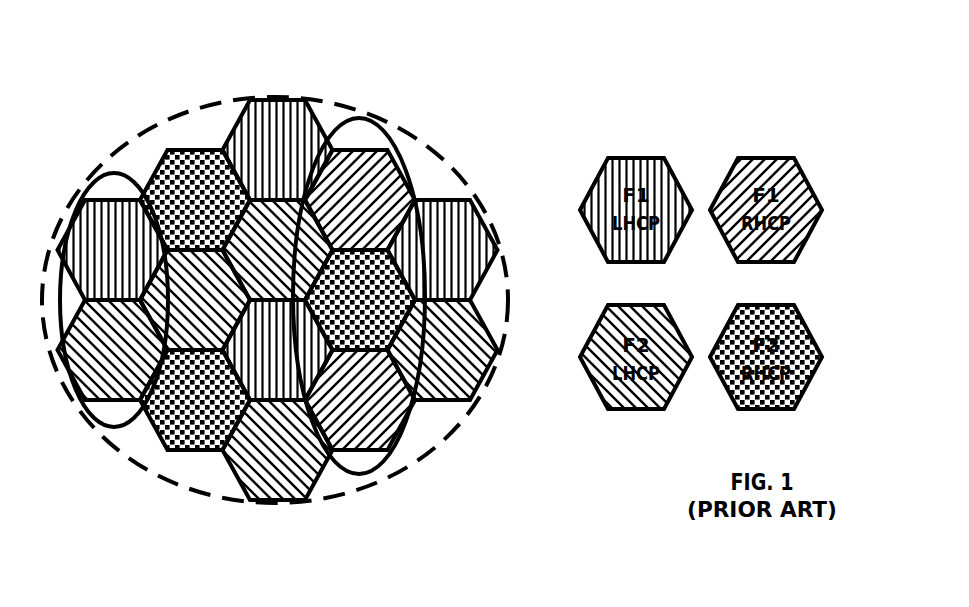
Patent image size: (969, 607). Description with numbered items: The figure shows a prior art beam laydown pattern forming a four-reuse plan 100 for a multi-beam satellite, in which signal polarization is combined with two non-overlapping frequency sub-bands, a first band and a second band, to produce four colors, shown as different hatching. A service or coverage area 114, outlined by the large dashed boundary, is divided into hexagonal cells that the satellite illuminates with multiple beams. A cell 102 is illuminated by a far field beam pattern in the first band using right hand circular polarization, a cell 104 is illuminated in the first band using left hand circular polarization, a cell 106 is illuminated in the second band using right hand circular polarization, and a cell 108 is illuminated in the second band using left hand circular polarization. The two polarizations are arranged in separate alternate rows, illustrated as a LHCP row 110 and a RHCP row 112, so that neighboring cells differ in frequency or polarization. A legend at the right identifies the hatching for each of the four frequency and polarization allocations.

The 4-reuse plan 100 is at (341, 286).
The cell 102 is at (352, 190).
The cell 104 is at (277, 137).
The cell 106 is at (360, 280).
The cell 108 is at (277, 200).
The LHCP row 110 is at (113, 173).
The RHCP row 112 is at (362, 473).
The service or coverage area 114 is at (438, 155).